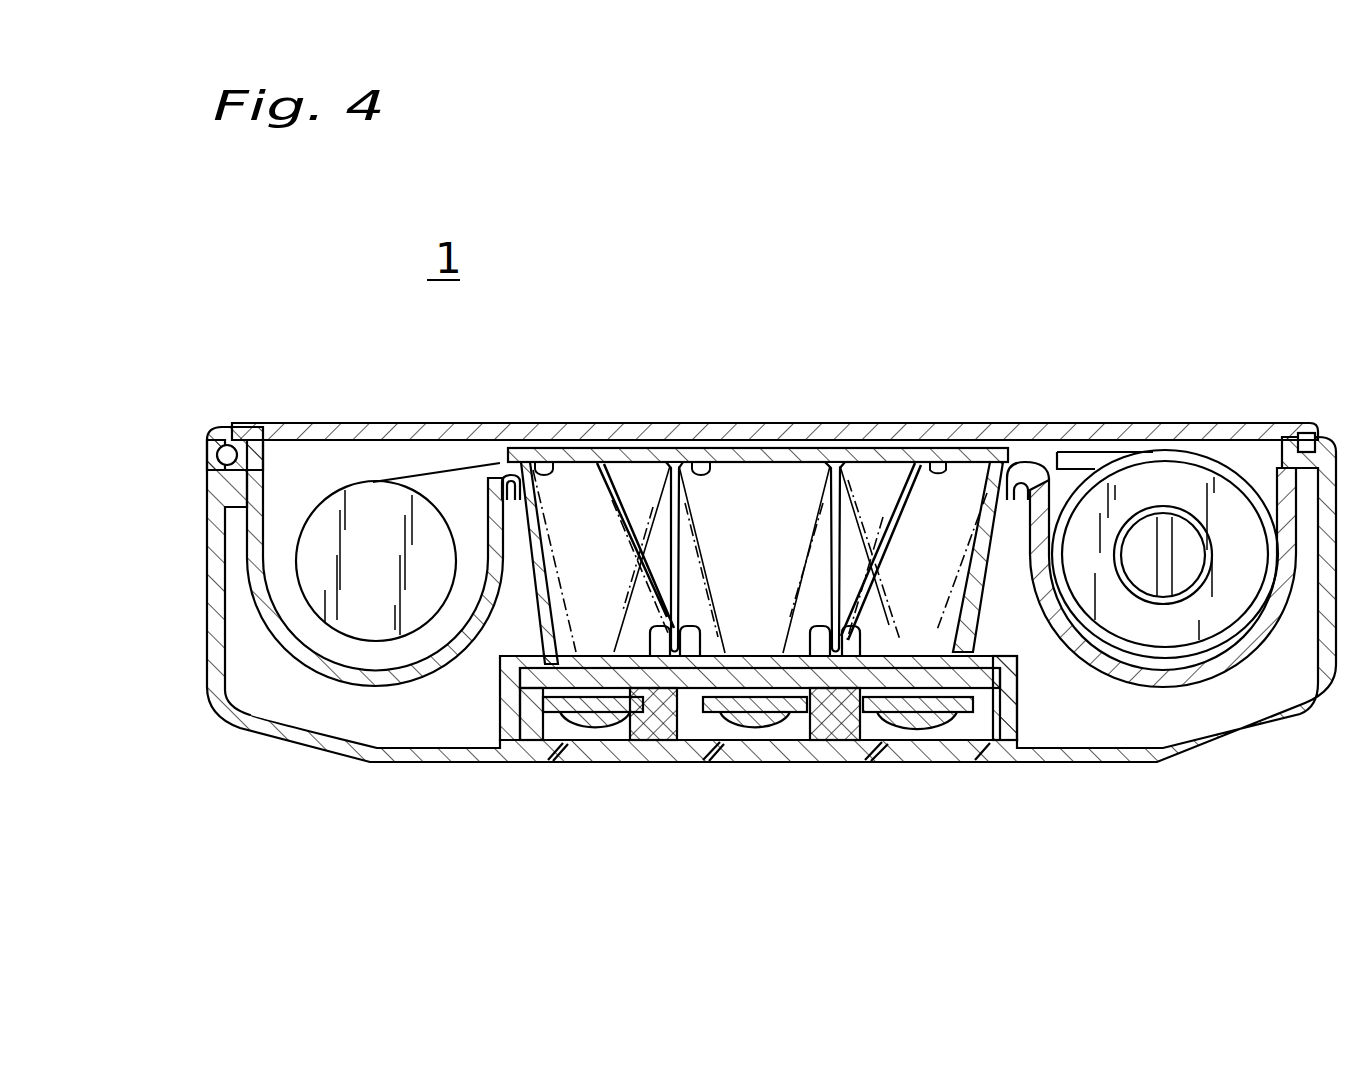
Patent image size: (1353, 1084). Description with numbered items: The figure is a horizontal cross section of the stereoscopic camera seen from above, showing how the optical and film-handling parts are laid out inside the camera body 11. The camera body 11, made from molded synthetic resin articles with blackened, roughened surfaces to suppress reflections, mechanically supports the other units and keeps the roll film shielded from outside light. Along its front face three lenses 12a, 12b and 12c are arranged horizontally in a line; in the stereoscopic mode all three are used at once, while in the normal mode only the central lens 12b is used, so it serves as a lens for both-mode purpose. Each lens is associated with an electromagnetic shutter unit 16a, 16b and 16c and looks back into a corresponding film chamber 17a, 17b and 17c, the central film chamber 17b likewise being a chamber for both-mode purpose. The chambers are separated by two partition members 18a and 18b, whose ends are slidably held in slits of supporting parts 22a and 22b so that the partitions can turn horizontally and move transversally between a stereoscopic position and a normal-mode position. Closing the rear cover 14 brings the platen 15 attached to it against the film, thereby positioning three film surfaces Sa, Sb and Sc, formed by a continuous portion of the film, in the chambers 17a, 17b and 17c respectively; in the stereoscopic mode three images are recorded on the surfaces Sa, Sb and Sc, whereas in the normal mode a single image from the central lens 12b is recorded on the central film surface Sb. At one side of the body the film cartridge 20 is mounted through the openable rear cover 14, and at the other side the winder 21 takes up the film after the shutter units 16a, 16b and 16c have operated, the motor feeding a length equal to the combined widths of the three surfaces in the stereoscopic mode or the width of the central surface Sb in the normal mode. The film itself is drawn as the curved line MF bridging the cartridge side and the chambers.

The camera body 11 is at (207, 627).
The lens 12a is at (590, 720).
The central lens 12b is at (758, 727).
The lens 12c is at (918, 727).
The rear cover 14 is at (298, 425).
The platen 15 is at (792, 455).
The electromagnetic shutter unit 16a is at (653, 735).
The electromagnetic shutter unit 16b is at (818, 730).
The electromagnetic shutter unit 16c is at (987, 740).
The film chamber 17a is at (575, 480).
The film chamber 17b is at (730, 470).
The film chamber 17c is at (960, 480).
The partition member 18a is at (683, 557).
The partition member 18b is at (825, 545).
The film cartridge 20 is at (1230, 470).
The winder 21 is at (320, 517).
The supporting part 22a is at (677, 678).
The supporting part 22b is at (857, 637).
The optical filter MF is at (420, 473).
The film surface Sa is at (542, 462).
The central film surface Sb is at (697, 462).
The film surface Sc is at (936, 462).